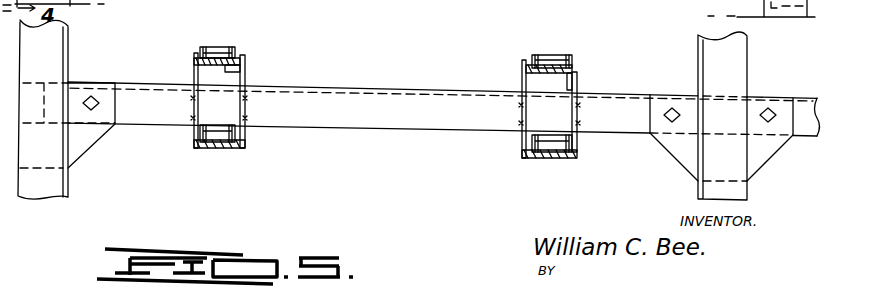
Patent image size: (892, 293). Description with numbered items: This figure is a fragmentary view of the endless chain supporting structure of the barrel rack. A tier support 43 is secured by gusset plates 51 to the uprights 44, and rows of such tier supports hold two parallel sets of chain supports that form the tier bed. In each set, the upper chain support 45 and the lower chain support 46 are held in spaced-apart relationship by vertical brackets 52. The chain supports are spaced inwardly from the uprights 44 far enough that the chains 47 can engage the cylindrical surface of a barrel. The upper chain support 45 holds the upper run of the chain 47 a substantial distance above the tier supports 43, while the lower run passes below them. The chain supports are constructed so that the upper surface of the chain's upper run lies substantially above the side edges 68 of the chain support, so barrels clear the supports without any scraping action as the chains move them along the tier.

The tier support 43 is at (417, 124).
The upright 44 is at (66, 50).
The upper chain support 45 is at (221, 50).
The lower chain support 46 is at (222, 150).
The chain 47 is at (214, 41).
The gusset plate 51 is at (86, 150).
The vertical bracket 52 is at (247, 77).
The side edge of chain support 68 is at (527, 60).